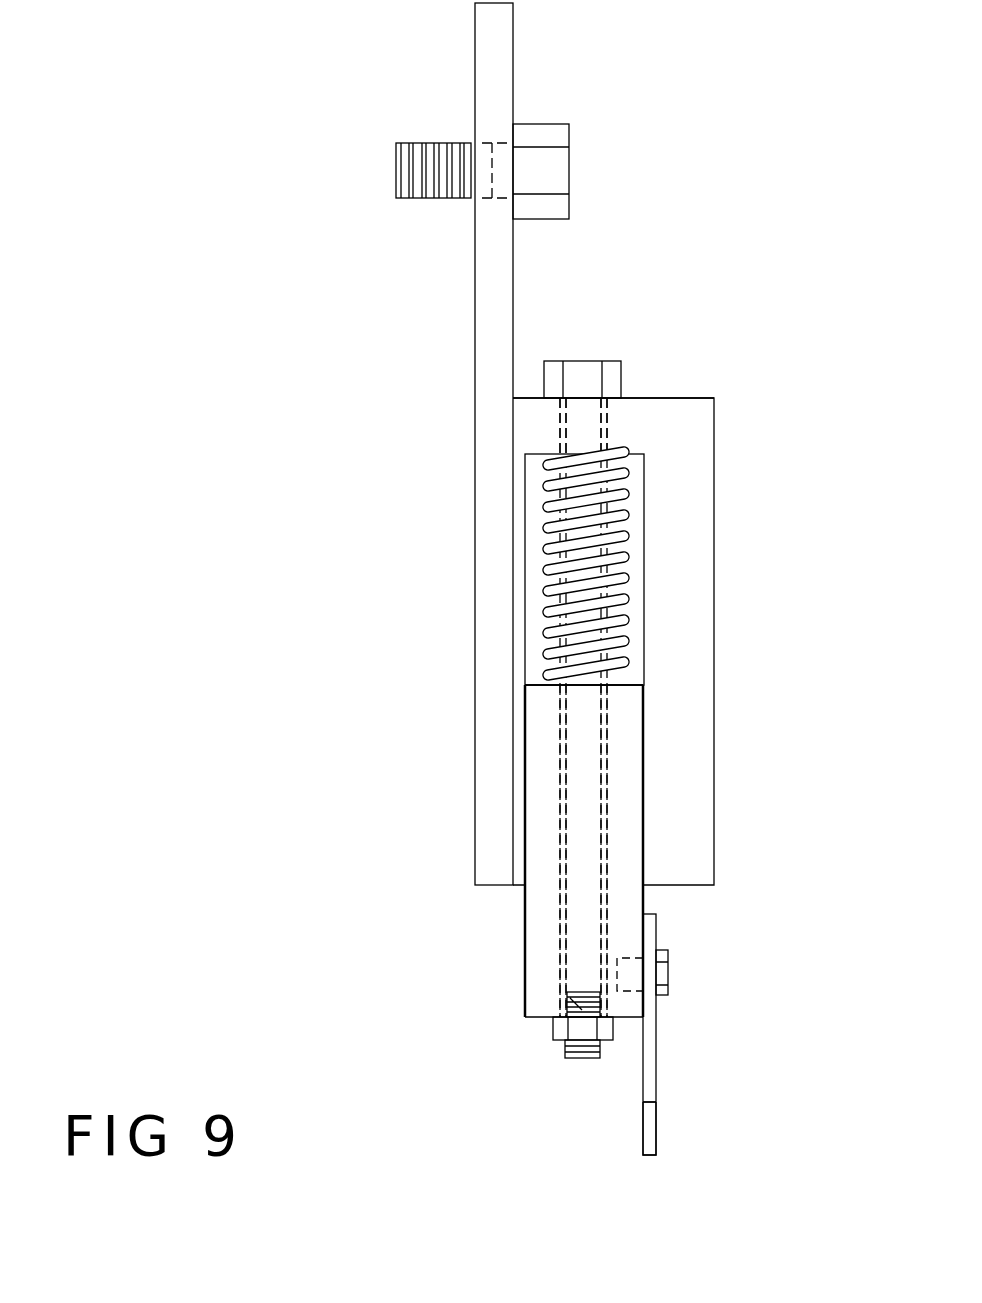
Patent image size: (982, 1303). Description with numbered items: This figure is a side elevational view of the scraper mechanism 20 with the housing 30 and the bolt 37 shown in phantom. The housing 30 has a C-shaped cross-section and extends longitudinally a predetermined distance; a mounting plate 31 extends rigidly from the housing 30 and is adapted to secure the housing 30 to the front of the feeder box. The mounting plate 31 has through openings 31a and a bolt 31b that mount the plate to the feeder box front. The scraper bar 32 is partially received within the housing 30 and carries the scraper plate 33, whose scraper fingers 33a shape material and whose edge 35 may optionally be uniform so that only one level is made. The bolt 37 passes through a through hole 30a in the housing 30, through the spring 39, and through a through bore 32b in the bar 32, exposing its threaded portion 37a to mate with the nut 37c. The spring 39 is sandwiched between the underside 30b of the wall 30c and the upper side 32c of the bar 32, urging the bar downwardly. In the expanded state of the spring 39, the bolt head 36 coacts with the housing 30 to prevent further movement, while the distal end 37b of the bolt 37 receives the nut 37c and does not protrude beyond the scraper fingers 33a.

The scraper mechanism 20 is at (438, 282).
The housing 30 is at (714, 458).
The through holes 30a is at (560, 435).
The underside 30b is at (542, 455).
The wall 30c is at (683, 398).
The mounting plate 31 is at (513, 45).
The through openings 31a is at (491, 185).
The bolt 31b is at (569, 170).
The scraper bar 32 is at (527, 922).
The through bores 32b is at (560, 811).
The upper side 32c is at (527, 683).
The scraper plate 33 is at (657, 932).
The scraper fingers 33a is at (655, 1143).
The edge 35 is at (648, 1103).
The bolt head 36 is at (575, 361).
The bolt 37 is at (583, 413).
The threaded portion 37a is at (560, 995).
The distal end 37b is at (580, 1058).
The nut 37c is at (603, 1029).
The spring 39 is at (618, 537).